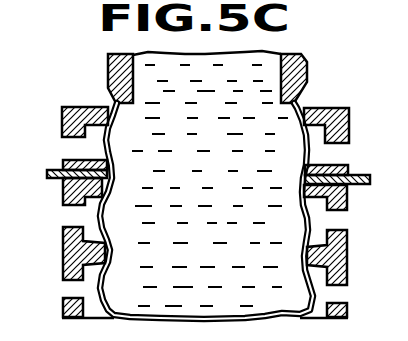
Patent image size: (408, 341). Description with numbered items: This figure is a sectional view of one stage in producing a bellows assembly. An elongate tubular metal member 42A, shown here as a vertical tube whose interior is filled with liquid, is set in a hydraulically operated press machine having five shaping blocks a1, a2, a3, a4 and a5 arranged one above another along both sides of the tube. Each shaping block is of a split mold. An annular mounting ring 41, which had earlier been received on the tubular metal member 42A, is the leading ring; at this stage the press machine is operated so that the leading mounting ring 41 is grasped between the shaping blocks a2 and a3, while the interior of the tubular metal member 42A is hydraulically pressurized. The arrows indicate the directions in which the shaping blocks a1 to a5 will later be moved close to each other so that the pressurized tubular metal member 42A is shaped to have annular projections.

The elongate tubular metal member 42A is at (112, 97).
The shaping block a1 is at (63, 110).
The shaping block a2 is at (62, 137).
The annular mounting ring 41 is at (50, 150).
The shaping block a3 is at (63, 192).
The shaping block a4 is at (50, 230).
The shaping block a5 is at (63, 307).